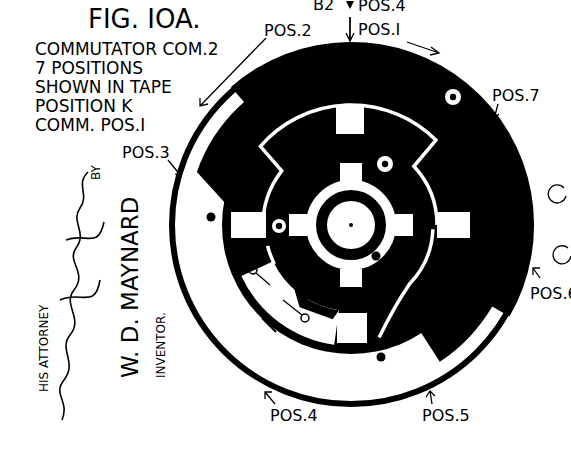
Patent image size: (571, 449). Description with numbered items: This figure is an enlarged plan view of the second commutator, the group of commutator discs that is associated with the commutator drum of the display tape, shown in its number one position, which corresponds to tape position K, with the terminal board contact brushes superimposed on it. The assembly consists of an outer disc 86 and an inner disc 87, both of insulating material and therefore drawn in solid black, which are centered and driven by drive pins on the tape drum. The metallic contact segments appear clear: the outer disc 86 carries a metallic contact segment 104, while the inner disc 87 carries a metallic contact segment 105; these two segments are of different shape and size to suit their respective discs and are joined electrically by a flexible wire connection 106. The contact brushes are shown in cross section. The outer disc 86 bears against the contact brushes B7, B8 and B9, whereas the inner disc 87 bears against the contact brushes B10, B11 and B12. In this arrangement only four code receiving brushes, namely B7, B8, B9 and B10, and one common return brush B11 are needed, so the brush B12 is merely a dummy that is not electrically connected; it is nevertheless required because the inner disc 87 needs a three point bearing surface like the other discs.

The contact brush B7 is at (456, 94).
The contact brush B8 is at (378, 360).
The contact brush B9 is at (208, 216).
The contact brush B10 is at (276, 226).
The common return contact brush B11 is at (379, 254).
The contact brush B12 is at (384, 172).
The outer disc 86 is at (513, 300).
The inner disc 87 is at (400, 332).
The metallic contact segment 104 is at (312, 276).
The metallic contact segment 105 is at (246, 366).
The flexible wire connection 106 is at (303, 270).